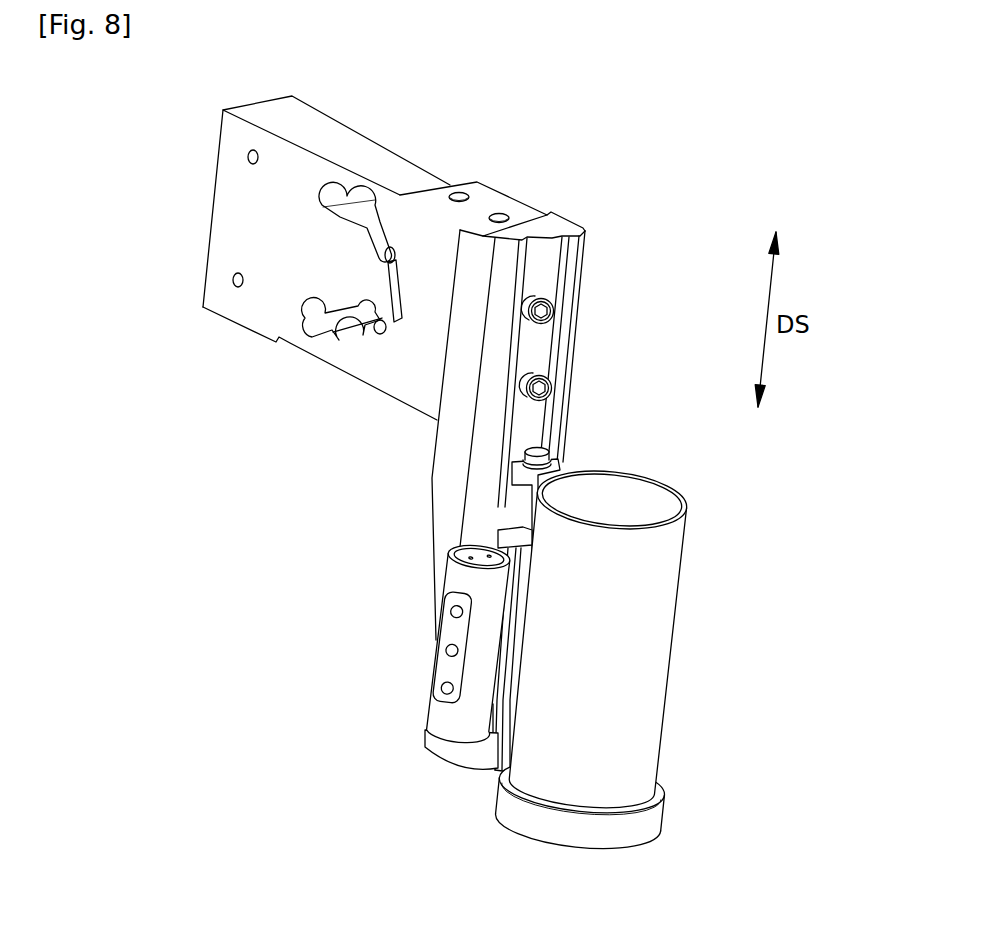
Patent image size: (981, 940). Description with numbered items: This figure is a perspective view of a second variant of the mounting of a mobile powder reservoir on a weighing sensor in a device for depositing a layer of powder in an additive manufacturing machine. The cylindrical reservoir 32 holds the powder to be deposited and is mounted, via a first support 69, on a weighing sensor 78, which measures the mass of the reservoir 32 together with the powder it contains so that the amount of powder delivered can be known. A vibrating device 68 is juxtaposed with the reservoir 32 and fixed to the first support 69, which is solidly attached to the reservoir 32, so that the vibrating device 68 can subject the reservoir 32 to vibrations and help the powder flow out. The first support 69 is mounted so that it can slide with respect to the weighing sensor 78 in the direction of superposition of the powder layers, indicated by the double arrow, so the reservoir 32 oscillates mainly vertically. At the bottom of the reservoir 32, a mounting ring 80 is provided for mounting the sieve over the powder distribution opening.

The weighing sensor 78 is at (392, 165).
The first support 69 is at (462, 757).
The vibrating device 68 is at (443, 658).
The powder reservoir 32 is at (680, 663).
The mounting ring 80 is at (602, 828).